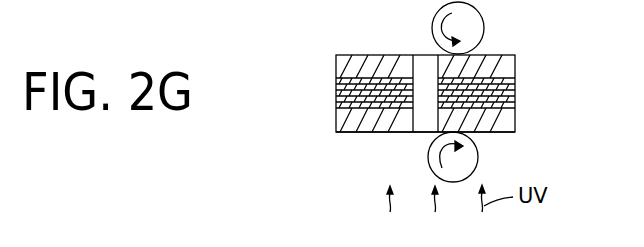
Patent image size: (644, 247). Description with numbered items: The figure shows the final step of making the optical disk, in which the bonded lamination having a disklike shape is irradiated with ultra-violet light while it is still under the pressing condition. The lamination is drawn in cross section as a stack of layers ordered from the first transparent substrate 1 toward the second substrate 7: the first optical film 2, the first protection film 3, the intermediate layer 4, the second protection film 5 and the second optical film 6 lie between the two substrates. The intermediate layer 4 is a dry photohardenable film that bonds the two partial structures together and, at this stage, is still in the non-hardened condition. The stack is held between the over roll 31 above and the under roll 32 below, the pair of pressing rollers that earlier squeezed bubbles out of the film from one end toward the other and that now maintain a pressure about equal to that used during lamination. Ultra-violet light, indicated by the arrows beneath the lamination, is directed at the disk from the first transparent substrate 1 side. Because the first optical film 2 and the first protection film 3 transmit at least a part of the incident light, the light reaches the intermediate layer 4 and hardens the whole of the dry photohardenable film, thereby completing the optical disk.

The first transparent substrate 1 is at (337, 122).
The first optical film 2 is at (336, 106).
The first protection film 3 is at (336, 100).
The intermediate layer 4 is at (336, 93).
The second protection film 5 is at (336, 85).
The second optical film 6 is at (336, 80).
The second substrate 7 is at (336, 63).
The over roll 31 is at (480, 25).
The under roll 32 is at (480, 159).